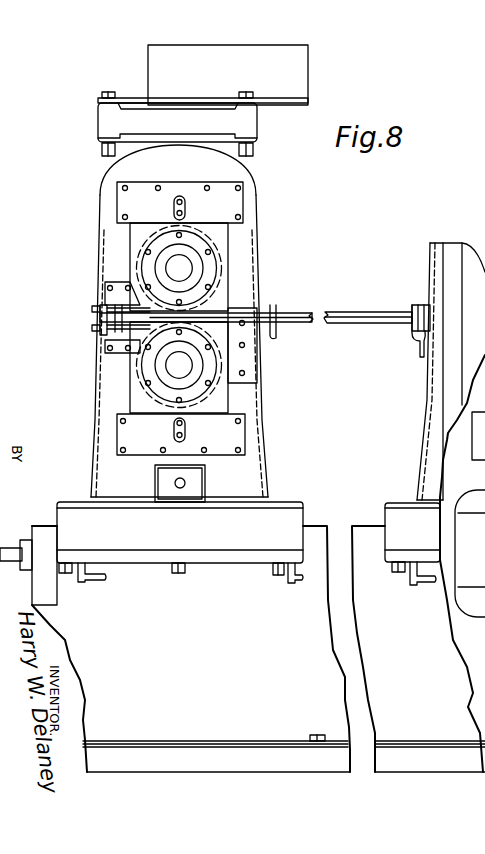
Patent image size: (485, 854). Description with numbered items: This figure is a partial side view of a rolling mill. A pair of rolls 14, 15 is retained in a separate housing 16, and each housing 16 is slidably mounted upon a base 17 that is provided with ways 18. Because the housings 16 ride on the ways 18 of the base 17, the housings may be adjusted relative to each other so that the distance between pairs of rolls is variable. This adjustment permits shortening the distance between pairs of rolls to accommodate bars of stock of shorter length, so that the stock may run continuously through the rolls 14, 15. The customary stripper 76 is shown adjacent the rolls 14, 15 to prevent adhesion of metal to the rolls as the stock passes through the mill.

The roll 14 is at (213, 382).
The roll 15 is at (220, 267).
The housing 16 is at (258, 220).
The base 17 is at (160, 747).
The ways 18 is at (318, 550).
The stripper 76 is at (108, 298).